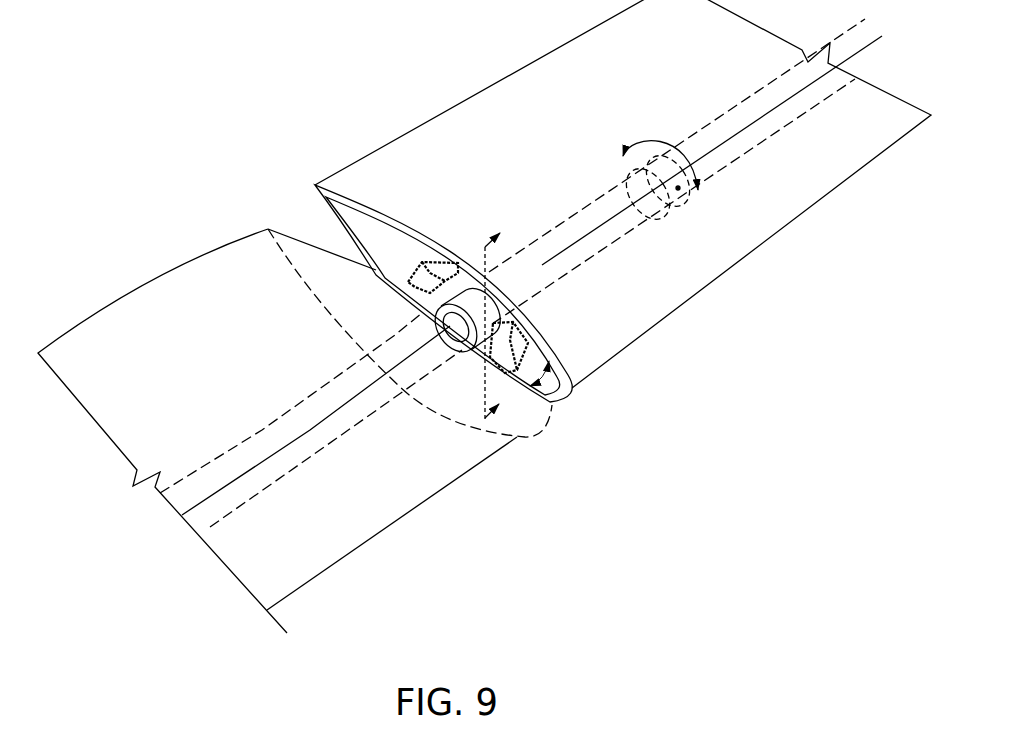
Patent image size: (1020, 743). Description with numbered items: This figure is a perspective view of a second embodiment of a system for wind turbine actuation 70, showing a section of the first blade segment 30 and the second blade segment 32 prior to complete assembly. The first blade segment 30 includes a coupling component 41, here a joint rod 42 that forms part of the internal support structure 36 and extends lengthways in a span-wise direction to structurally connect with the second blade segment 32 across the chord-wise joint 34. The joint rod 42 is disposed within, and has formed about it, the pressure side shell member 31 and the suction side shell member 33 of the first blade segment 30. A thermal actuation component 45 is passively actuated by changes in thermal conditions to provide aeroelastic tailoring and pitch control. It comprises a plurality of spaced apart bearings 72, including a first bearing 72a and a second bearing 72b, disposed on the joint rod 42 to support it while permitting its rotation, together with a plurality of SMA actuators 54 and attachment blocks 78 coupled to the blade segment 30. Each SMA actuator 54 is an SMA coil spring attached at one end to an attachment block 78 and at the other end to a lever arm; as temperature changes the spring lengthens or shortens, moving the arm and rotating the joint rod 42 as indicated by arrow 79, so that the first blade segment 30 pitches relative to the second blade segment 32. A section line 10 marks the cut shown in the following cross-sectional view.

The cross-sectional view line 10 is at (506, 319).
The first blade segment 30 is at (623, 250).
The pressure side shell member 31 is at (458, 128).
The second blade segment 32 is at (178, 265).
The suction side shell member 33 is at (859, 168).
The chord-wise joint 34 is at (547, 420).
The internal support structure 36 is at (300, 343).
The coupling component 41 is at (793, 124).
The joint rod 42 is at (383, 410).
The thermal actuation component 45 is at (675, 346).
The SMA actuator 54 is at (425, 275).
The system for wind turbine actuation 70 is at (258, 67).
The bearings 72 is at (563, 241).
The first bearing 72a is at (478, 304).
The second bearing 72b is at (625, 159).
The attachment block 78 is at (408, 291).
The arrow indicating rotation 79 is at (650, 147).